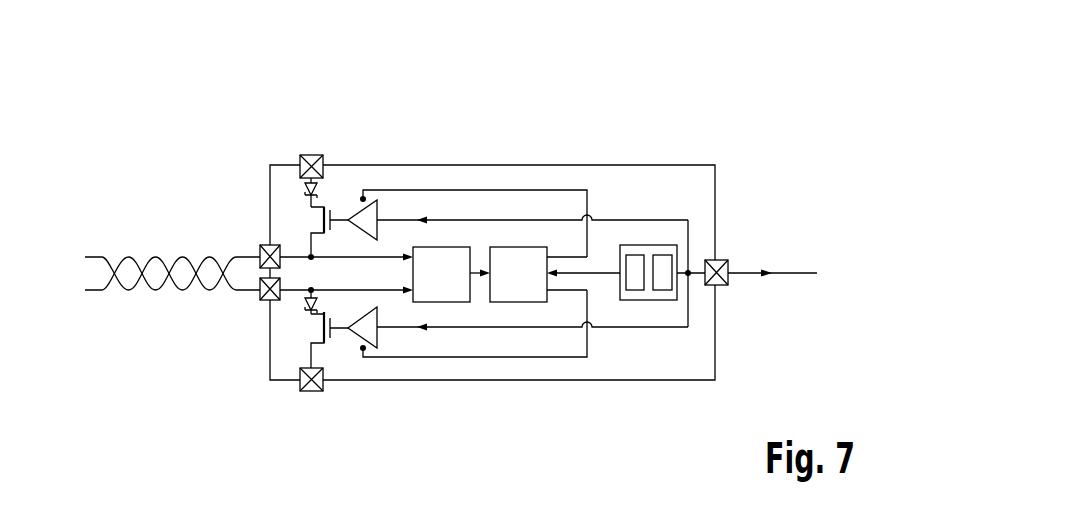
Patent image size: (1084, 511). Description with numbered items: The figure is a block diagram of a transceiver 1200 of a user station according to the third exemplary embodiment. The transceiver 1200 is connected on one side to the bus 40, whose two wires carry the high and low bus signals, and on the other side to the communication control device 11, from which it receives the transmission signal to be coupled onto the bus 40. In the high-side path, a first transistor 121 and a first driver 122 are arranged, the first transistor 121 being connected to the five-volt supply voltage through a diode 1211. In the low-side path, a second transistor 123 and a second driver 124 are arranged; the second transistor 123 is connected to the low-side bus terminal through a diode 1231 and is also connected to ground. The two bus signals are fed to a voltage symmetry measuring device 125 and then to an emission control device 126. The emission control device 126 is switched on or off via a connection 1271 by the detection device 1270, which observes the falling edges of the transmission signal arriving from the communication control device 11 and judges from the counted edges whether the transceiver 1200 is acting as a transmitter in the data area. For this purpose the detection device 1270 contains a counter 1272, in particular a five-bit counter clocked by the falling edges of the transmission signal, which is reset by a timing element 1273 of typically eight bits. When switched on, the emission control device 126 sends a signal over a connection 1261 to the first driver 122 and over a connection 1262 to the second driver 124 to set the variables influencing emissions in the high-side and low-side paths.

The transceiver 1200 is at (692, 106).
The bus 40 is at (90, 238).
The communication control device 11 is at (835, 193).
The diode 1211 is at (303, 190).
The first transistor 121 is at (323, 213).
The diode 1231 is at (304, 302).
The second transistor 123 is at (320, 332).
The first driver 122 is at (383, 206).
The second driver 124 is at (379, 339).
The voltage symmetry measuring device 125 is at (441, 247).
The emission control device 126 is at (518, 247).
The connection 1261 is at (490, 190).
The connection 1262 is at (517, 357).
The connection 1271 is at (603, 272).
The detection device 1270 is at (648, 245).
The counter 1272 is at (636, 290).
The timing element 1273 is at (662, 290).